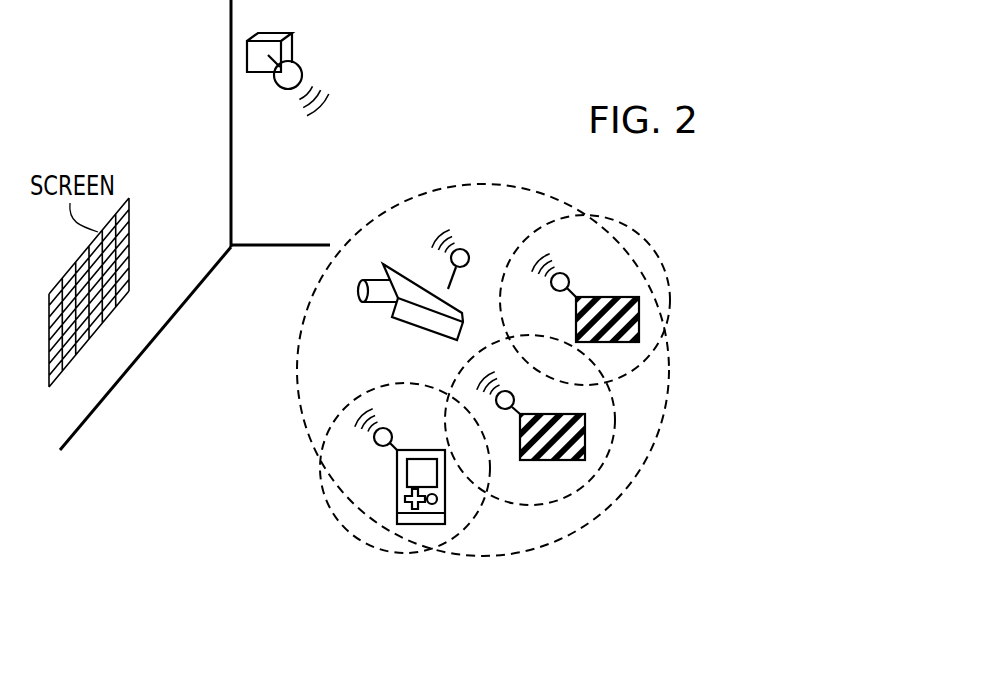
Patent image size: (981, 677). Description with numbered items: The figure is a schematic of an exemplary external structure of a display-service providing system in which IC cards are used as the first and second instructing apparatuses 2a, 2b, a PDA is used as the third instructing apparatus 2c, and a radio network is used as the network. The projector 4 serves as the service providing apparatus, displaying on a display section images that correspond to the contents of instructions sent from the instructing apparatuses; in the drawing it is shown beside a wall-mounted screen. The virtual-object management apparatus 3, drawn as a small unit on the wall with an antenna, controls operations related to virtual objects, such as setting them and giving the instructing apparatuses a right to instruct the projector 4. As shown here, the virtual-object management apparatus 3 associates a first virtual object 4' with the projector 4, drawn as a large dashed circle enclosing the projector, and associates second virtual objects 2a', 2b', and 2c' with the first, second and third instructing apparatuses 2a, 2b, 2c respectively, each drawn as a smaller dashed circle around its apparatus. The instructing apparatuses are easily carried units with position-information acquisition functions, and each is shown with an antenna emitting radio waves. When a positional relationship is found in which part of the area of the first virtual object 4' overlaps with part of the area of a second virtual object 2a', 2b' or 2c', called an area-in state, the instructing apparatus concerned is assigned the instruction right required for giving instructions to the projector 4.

The virtual-object management apparatus 3 is at (292, 41).
The projector 4 is at (413, 300).
The first virtual object 4' is at (460, 370).
The first instructing apparatus 2a is at (584, 298).
The second virtual object 2a' is at (611, 300).
The second instructing apparatus 2b is at (587, 432).
The second virtual object 2b' is at (584, 420).
The third instructing apparatus 2c is at (399, 466).
The second virtual object 2c' is at (405, 495).